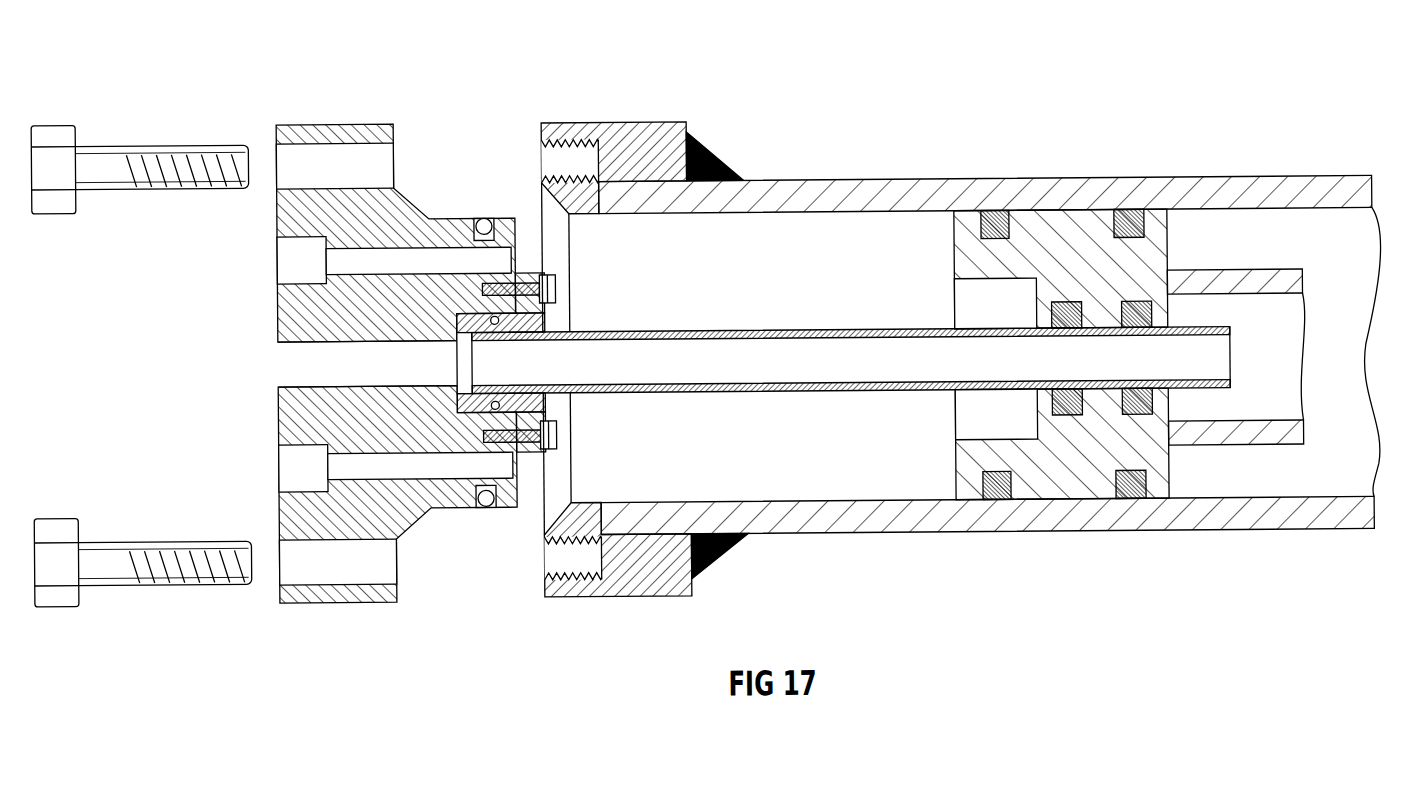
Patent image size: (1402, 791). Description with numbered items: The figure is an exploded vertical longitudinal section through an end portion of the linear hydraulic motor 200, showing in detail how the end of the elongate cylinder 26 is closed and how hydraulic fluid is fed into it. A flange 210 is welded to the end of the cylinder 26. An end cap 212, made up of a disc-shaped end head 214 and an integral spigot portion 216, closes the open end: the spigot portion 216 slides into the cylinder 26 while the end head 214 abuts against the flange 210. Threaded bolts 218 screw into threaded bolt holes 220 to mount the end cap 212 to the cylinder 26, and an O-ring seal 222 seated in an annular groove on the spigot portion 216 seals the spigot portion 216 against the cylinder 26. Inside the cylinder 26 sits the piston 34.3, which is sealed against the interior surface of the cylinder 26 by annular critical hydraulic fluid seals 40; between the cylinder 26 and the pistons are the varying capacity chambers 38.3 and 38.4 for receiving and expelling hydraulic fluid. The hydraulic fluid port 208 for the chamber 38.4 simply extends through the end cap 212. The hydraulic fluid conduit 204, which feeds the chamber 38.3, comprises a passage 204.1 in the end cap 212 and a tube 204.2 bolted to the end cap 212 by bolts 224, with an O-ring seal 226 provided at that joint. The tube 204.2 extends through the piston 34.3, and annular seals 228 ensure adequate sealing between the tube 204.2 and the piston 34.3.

The cylinder 26 is at (945, 197).
The piston 34.3 is at (1050, 254).
The chamber 38.3 is at (1223, 310).
The chamber 38.4 is at (834, 260).
The annular critical hydraulic fluid seals 40 is at (1130, 506).
The linear hydraulic motor 200 is at (1147, 105).
The hydraulic fluid conduit 204 is at (705, 350).
The passage 204.1 is at (300, 368).
The tube 204.2 is at (778, 333).
The hydraulic fluid port 208 is at (296, 259).
The flange 210 is at (607, 340).
The end cap 212 is at (322, 108).
The end head 214 is at (290, 314).
The spigot portion 216 is at (446, 228).
The threaded bolts 218 is at (113, 160).
The threaded bolt holes 220 is at (560, 157).
The O-ring seal 222 is at (487, 506).
The bolts 224 is at (558, 288).
The O-ring seal 226 is at (498, 325).
The annular seals 228 is at (1137, 306).